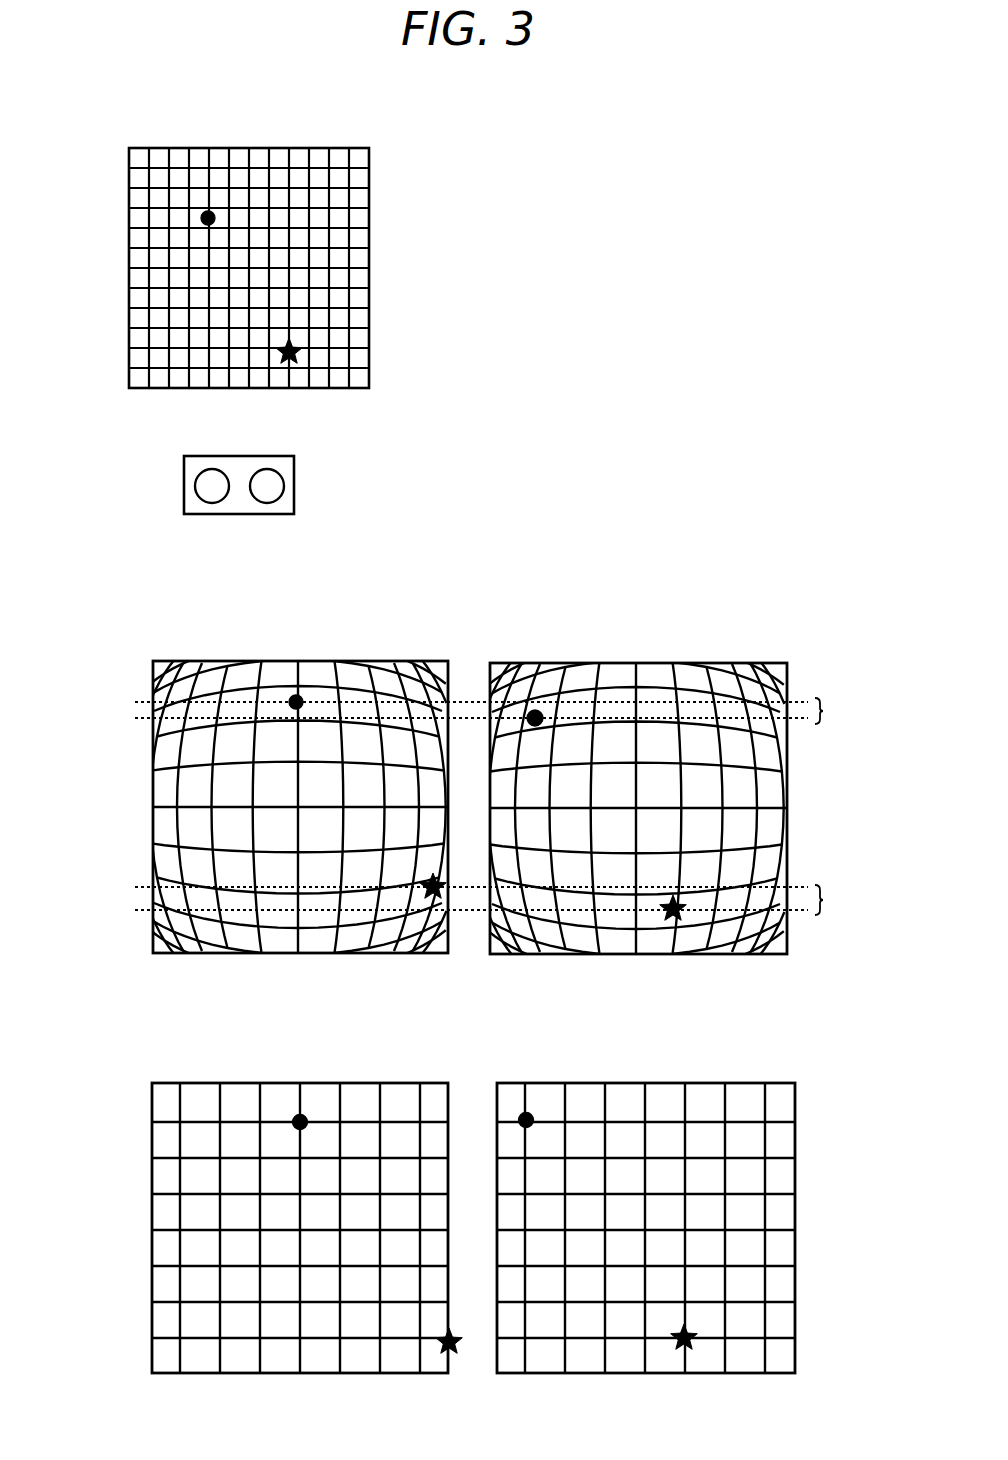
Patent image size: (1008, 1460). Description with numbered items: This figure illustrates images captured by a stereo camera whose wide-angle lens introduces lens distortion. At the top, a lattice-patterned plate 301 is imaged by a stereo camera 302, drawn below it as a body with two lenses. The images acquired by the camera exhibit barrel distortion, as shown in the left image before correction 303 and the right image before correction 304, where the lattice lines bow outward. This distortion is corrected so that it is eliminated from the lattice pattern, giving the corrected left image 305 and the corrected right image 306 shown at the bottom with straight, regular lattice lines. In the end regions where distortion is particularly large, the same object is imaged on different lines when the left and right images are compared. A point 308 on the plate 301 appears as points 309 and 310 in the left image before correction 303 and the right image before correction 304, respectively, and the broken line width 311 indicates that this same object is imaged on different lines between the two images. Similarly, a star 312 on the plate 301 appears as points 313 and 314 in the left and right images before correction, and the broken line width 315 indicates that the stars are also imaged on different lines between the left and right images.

The lattice-patterned plate 301 is at (221, 149).
The stereo camera 302 is at (294, 492).
The left image before correction 303 is at (343, 661).
The right image before correction 304 is at (636, 663).
The corrected left image 305 is at (307, 1207).
The corrected right image 306 is at (646, 1207).
The point 308 is at (202, 218).
The point 309 is at (296, 702).
The point 310 is at (535, 716).
The broken line width 311 is at (509, 711).
The star 312 is at (302, 351).
The point 313 is at (433, 897).
The point 314 is at (670, 912).
The broken line width 315 is at (509, 902).